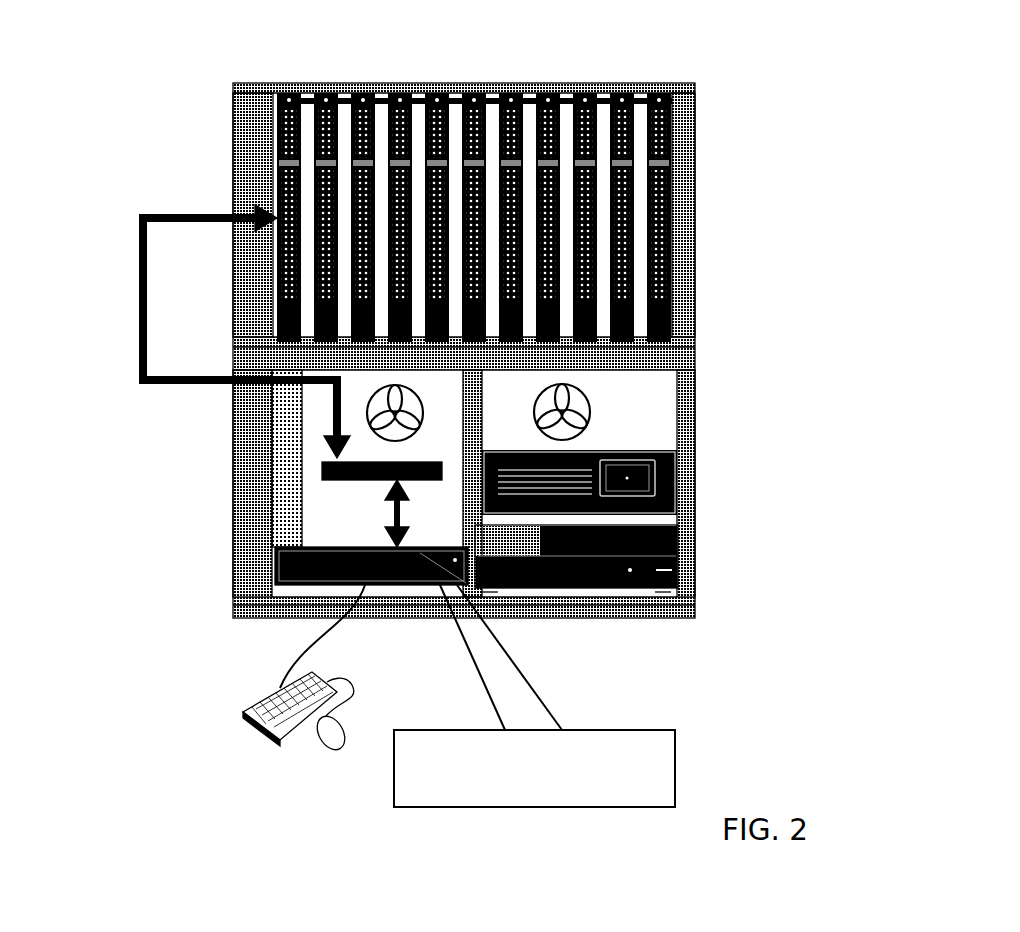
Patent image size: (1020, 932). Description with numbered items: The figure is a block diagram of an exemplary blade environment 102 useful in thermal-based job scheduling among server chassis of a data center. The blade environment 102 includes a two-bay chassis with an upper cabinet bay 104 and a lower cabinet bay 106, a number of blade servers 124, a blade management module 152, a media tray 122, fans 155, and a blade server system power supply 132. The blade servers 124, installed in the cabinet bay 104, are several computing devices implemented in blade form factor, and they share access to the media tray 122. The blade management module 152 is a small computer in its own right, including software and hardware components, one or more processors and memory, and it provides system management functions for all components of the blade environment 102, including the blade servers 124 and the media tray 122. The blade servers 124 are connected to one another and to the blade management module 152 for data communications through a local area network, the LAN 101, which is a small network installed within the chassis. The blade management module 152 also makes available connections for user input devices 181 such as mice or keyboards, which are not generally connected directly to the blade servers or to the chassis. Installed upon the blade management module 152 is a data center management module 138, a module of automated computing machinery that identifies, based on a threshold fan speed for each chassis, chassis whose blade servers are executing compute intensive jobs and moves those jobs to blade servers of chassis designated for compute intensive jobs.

The blade environment 102 is at (722, 30).
The cabinet bay 104 is at (233, 170).
The cabinet bay 106 is at (233, 440).
The blade servers 124 is at (692, 224).
The fans 155 is at (604, 413).
The blade server system power supply 132 is at (697, 481).
The media tray 122 is at (697, 568).
The blade management module 152 is at (262, 560).
The local area network (LAN) 101 is at (334, 536).
The data center management module 138 is at (587, 794).
The user input devices 181 is at (302, 812).